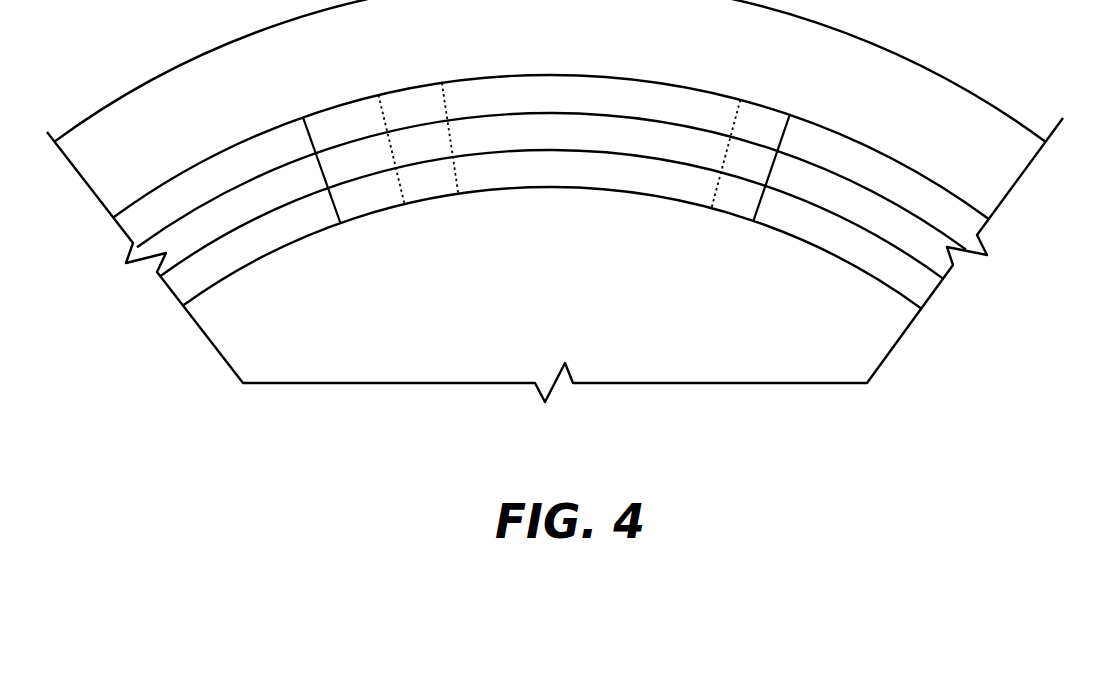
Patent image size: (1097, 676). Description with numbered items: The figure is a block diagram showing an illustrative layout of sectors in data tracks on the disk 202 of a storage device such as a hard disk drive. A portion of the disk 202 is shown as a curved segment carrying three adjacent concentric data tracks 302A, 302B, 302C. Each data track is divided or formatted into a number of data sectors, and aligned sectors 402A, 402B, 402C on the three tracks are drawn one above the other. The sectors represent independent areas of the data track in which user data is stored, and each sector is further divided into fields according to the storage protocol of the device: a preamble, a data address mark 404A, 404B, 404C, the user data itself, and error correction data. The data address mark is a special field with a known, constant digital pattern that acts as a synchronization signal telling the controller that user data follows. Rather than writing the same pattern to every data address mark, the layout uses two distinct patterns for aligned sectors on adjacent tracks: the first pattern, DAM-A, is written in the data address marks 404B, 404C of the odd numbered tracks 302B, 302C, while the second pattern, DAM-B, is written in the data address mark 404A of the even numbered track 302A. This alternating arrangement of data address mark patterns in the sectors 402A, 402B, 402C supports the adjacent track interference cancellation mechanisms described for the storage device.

The disk 202 is at (596, 44).
The data track 302A is at (973, 268).
The data track 302B is at (996, 236).
The data track 302C is at (951, 302).
The sector 402A is at (683, 150).
The sector 402B is at (681, 87).
The sector 402C is at (662, 197).
The data address mark 404A is at (451, 147).
The data address mark 404B is at (423, 76).
The data address mark 404C is at (423, 200).